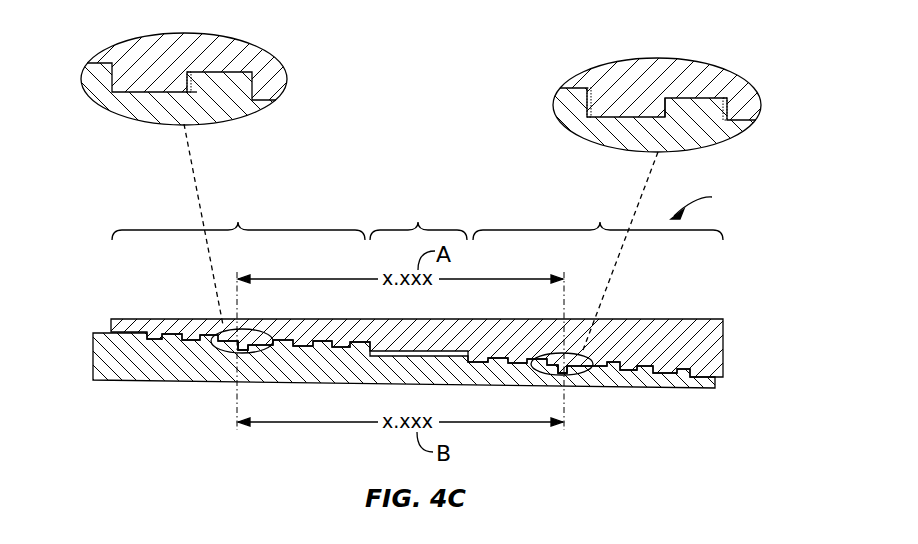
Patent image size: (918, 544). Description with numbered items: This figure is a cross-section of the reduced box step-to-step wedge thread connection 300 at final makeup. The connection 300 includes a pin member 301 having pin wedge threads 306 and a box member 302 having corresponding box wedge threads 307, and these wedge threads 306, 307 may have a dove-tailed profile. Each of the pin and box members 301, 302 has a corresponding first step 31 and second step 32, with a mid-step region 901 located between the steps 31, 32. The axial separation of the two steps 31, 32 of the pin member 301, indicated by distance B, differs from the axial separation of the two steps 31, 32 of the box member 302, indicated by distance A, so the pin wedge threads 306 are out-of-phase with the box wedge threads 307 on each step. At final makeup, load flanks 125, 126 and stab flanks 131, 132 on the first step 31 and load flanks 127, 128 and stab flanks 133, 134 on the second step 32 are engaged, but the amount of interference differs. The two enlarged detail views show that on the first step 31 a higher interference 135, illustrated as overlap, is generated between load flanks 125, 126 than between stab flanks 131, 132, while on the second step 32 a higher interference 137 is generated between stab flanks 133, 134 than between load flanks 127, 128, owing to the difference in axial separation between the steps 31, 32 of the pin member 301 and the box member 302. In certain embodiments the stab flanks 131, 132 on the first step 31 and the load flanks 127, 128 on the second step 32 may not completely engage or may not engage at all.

The two-step wedge thread connection 300 is at (716, 204).
The pin member 301 is at (138, 369).
The box member 302 is at (710, 346).
The pin wedge threads 306 is at (245, 351).
The box wedge threads 307 is at (268, 340).
The first step 31 is at (238, 219).
The second step 32 is at (598, 219).
The mid-step region 901 is at (418, 219).
The load flank 125 is at (173, 72).
The load flank 126 is at (197, 95).
The load flank 127 is at (653, 100).
The load flank 128 is at (667, 110).
The stab flank 131 is at (110, 80).
The stab flank 132 is at (128, 57).
The stab flank 133 is at (580, 112).
The stab flank 134 is at (603, 92).
The higher interference 135 is at (200, 73).
The higher interference 137 is at (585, 100).